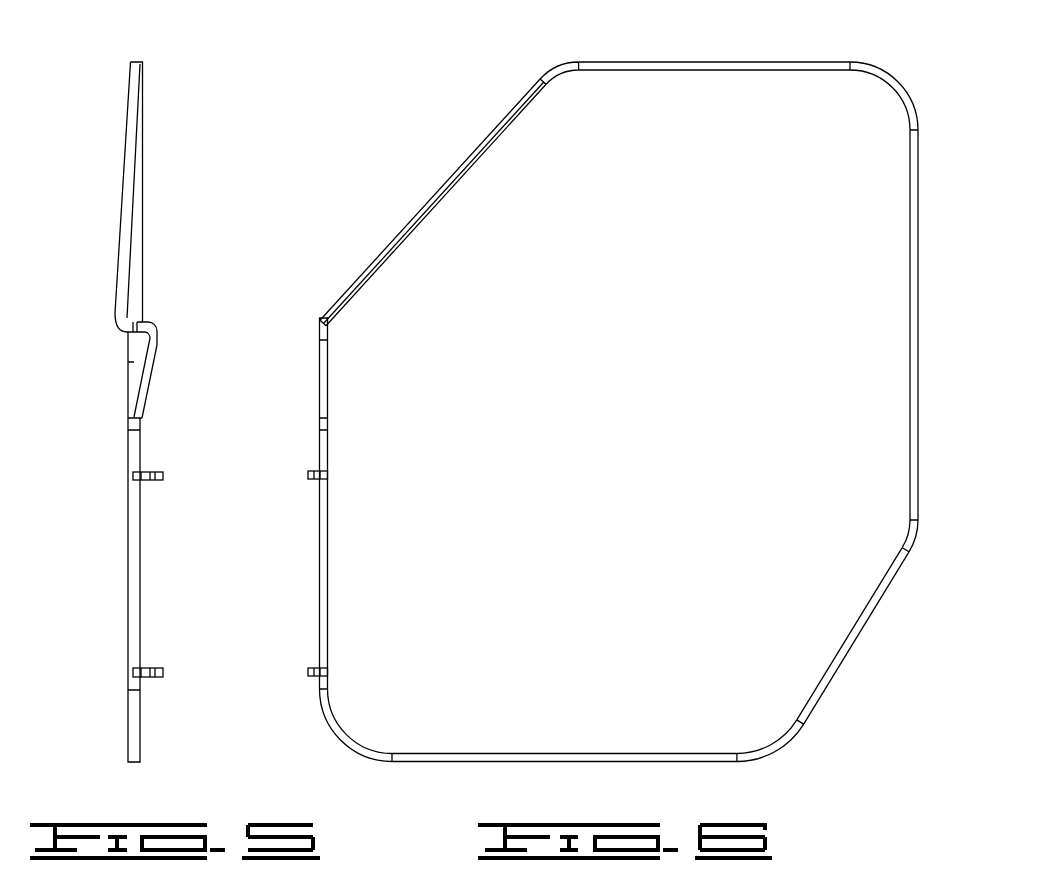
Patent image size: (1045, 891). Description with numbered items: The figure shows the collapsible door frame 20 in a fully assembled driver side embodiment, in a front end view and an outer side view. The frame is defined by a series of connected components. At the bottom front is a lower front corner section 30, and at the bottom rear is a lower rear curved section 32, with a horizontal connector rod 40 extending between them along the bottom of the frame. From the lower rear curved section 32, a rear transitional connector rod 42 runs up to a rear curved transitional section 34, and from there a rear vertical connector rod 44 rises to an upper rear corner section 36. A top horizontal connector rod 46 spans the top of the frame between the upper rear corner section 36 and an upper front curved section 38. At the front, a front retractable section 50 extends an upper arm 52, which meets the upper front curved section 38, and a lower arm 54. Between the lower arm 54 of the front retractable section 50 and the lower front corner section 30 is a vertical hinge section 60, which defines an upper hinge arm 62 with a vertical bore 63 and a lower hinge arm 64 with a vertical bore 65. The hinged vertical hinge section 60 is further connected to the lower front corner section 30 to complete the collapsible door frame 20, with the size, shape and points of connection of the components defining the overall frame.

In FIG. 6, the collapsible door frame 20 is at (403, 80).
In FIG. 5, the lower front corner section 30 is at (135, 738).
In FIG. 6, the lower front corner section 30 is at (340, 733).
In FIG. 6, the lower rear curved section 32 is at (782, 745).
In FIG. 6, the rear curved transitional section 34 is at (907, 540).
In FIG. 6, the upper rear corner section 36 is at (890, 80).
In FIG. 6, the upper front curved section 38 is at (563, 62).
In FIG. 6, the horizontal connector rod 40 is at (543, 758).
In FIG. 6, the rear transitional connector rod 42 is at (848, 645).
In FIG. 6, the rear vertical connector rod 44 is at (912, 242).
In FIG. 6, the top horizontal connector rod 46 is at (732, 62).
In FIG. 5, the front retractable section 50 is at (147, 327).
In FIG. 6, the front retractable section 50 is at (318, 330).
In FIG. 5, the upper arm 52 is at (133, 119).
In FIG. 6, the upper arm 52 is at (443, 185).
In FIG. 5, the lower arm 54 is at (143, 387).
In FIG. 5, the vertical hinge section 60 is at (135, 560).
In FIG. 6, the vertical hinge section 60 is at (322, 578).
In FIG. 5, the upper hinge arm 62 is at (133, 477).
In FIG. 6, the upper hinge arm 62 is at (308, 472).
In FIG. 5, the vertical bore 63 is at (152, 468).
In FIG. 6, the vertical bore 63 is at (325, 460).
In FIG. 5, the lower hinge arm 64 is at (133, 672).
In FIG. 6, the lower hinge arm 64 is at (308, 670).
In FIG. 5, the vertical bore 65 is at (152, 665).
In FIG. 6, the vertical bore 65 is at (322, 660).